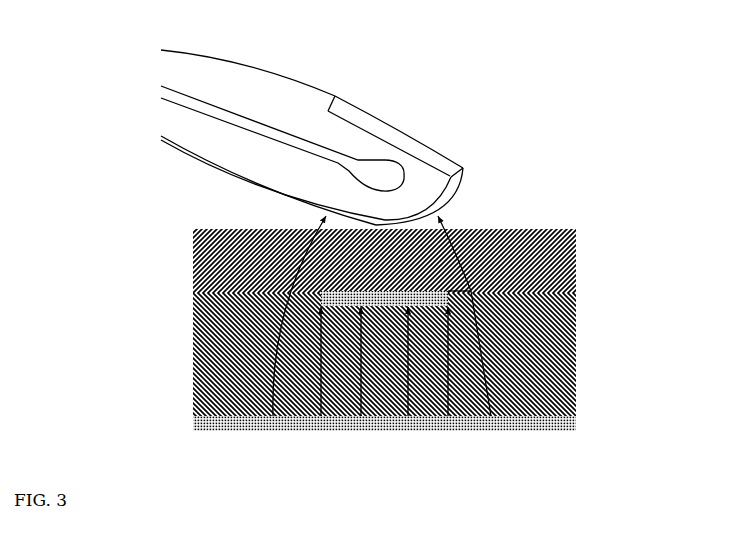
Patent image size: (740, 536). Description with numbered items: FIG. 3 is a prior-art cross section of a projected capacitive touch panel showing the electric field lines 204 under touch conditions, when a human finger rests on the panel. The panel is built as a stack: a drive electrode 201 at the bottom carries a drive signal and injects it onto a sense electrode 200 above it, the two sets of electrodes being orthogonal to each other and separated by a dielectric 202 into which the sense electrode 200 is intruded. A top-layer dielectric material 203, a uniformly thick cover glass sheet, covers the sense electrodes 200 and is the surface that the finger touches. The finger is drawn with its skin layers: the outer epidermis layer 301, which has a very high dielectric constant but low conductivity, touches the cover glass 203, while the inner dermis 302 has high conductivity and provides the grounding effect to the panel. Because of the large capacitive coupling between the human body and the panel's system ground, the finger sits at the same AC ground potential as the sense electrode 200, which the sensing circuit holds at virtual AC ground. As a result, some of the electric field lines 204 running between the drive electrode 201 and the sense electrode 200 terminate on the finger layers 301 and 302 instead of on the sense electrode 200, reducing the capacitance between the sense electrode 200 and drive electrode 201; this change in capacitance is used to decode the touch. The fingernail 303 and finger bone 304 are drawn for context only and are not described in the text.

The sense electrode 200 is at (463, 283).
The drive electrode 201 is at (512, 415).
The dielectric 202 is at (225, 360).
The top-layer dielectric material 203 is at (220, 255).
The electric field lines 204 is at (480, 337).
The epidermis layer 301 is at (443, 188).
The dermis 302 is at (207, 130).
The fingernail 303 is at (430, 153).
The finger bone 304 is at (222, 107).